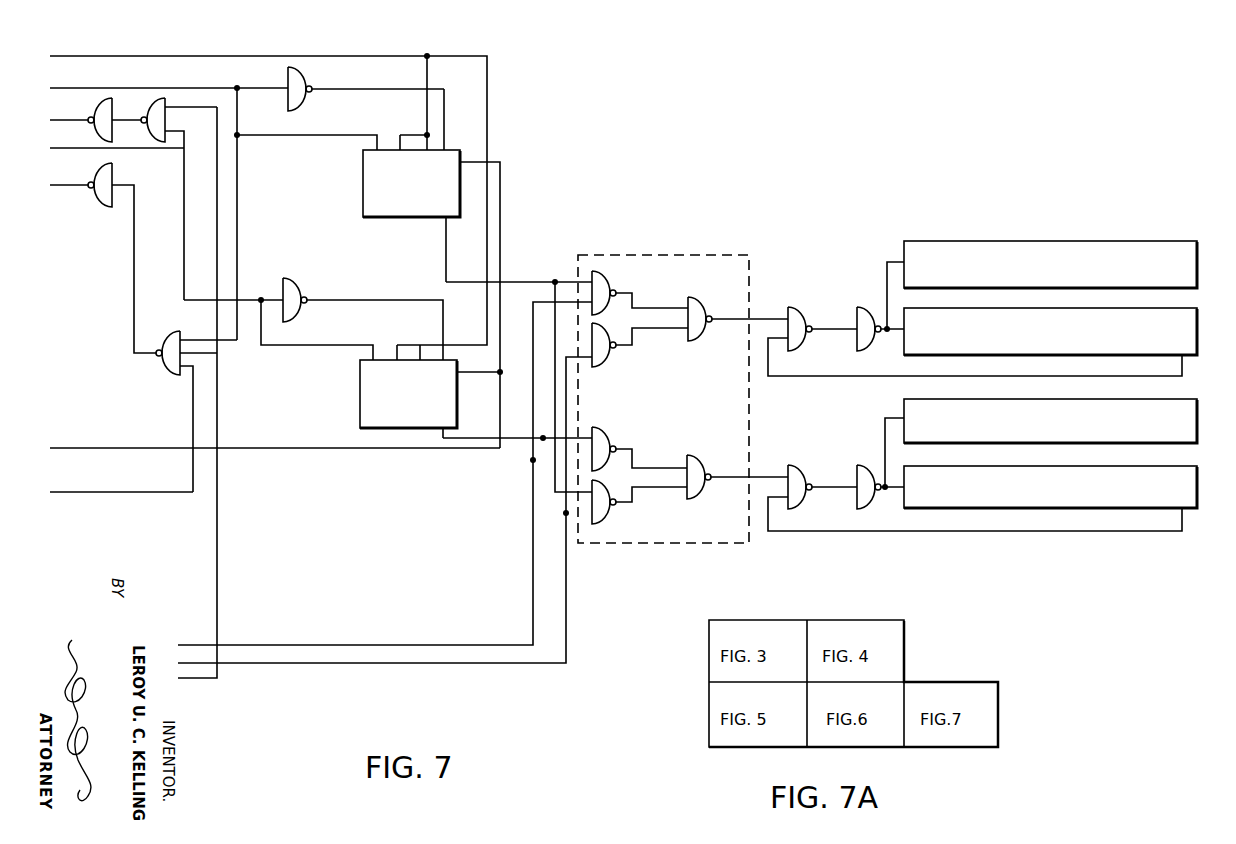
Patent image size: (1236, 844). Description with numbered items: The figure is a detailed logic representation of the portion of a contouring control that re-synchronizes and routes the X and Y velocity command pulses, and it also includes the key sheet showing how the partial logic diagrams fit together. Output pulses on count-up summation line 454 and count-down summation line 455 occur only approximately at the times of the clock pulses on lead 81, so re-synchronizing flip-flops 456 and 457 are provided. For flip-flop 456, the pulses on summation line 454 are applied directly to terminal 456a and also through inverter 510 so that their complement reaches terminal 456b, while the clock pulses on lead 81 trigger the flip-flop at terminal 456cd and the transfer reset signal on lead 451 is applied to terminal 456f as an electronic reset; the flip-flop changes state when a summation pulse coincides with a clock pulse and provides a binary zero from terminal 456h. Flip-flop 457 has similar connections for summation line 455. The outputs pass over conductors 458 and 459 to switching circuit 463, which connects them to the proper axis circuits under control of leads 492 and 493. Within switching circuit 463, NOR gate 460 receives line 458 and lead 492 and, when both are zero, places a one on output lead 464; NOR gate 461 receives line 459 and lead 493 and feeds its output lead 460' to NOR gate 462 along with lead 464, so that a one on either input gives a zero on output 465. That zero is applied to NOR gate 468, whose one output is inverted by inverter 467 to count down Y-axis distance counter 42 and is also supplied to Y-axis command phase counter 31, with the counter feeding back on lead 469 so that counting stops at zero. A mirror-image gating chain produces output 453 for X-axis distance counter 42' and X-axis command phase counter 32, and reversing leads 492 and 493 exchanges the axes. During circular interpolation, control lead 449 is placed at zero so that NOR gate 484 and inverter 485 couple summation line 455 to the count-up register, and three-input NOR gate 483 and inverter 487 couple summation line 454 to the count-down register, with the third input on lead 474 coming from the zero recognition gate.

The clock pulse lead 81 is at (76, 57).
The count-up summation line 454 is at (153, 88).
The inverter 485 is at (112, 98).
The NOR gate 484 is at (168, 117).
The count-down summation line 455 is at (95, 150).
The inverter 487 is at (114, 166).
The inverter 510 is at (303, 72).
The terminal 456b is at (458, 88).
The terminal 456cd is at (425, 107).
The terminal 456a is at (377, 138).
The re-synchronizing flip-flop 456 is at (362, 193).
The terminal 456f is at (480, 160).
The terminal 456h is at (447, 229).
The conductor 458 is at (540, 270).
The NOR gate 483 is at (176, 335).
The transfer reset signal lead 451 is at (121, 446).
The input line 474 is at (150, 491).
The re-synchronizing flip-flop 457 is at (359, 404).
The conductor 459 is at (514, 444).
The control lead 449 is at (218, 553).
The lead 492 is at (495, 645).
The lead 493 is at (447, 665).
The switching circuit 463 is at (687, 254).
The NOR gate 460 is at (622, 286).
The output lead 464 is at (638, 306).
The NOR gate 461 is at (605, 362).
The gate output line 460' is at (652, 341).
The NOR gate 462 is at (692, 306).
The output lead 465 is at (741, 323).
The NOR gate 468 is at (800, 296).
The inverter 467 is at (868, 297).
The feedback line 469 is at (857, 378).
The Y-axis command phase counter 31 is at (1197, 274).
The Y-axis distance counter 42 is at (1066, 331).
The X-axis command phase counter 32 is at (1197, 404).
The X-axis distance counter 42' is at (1070, 487).
The output lead 453 is at (766, 477).